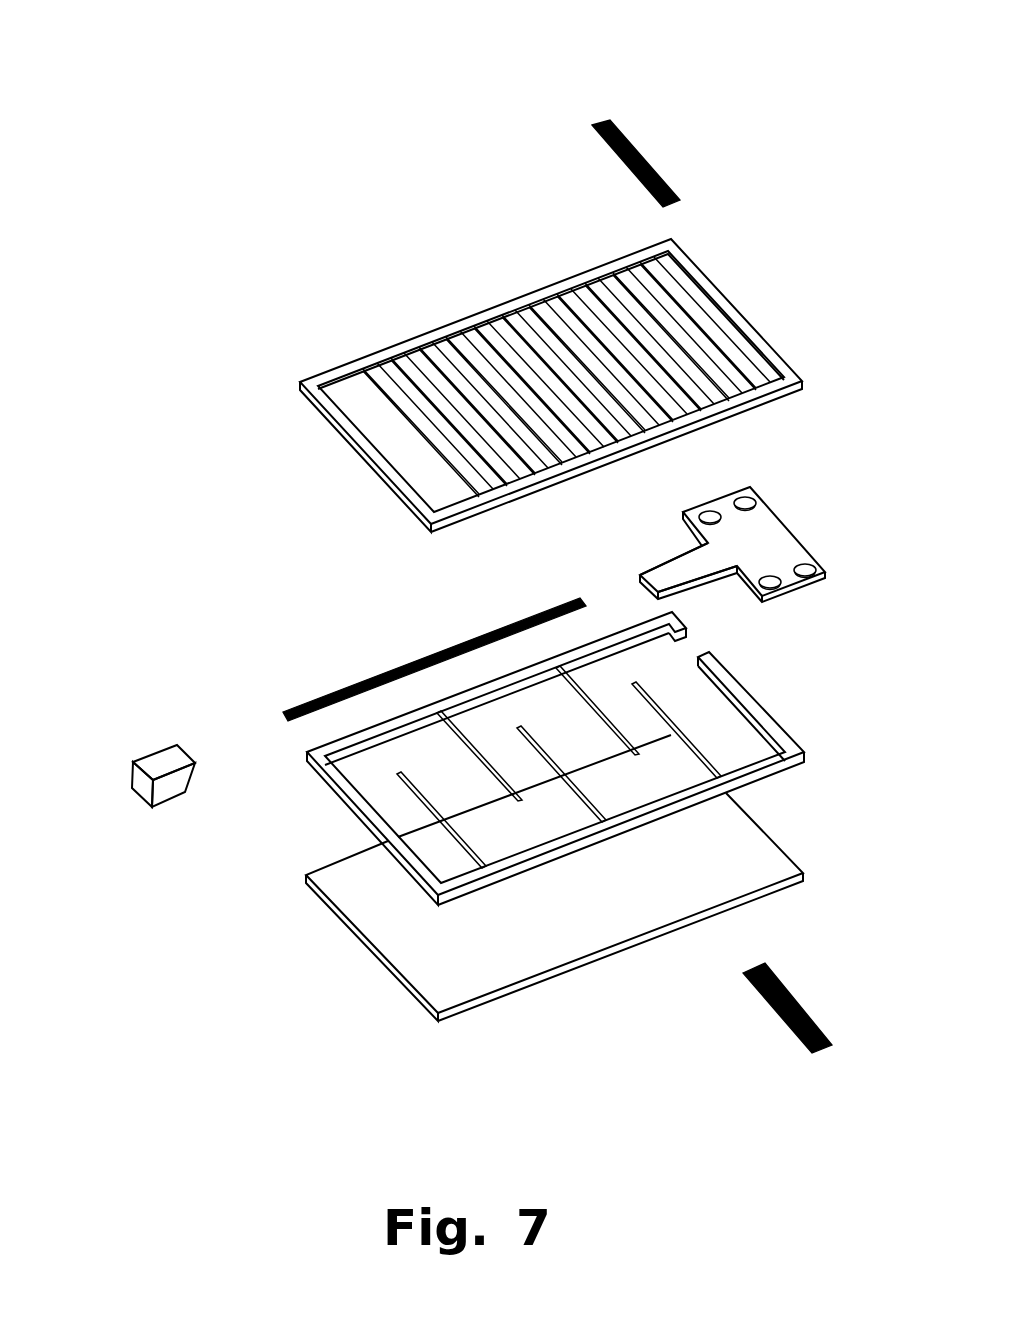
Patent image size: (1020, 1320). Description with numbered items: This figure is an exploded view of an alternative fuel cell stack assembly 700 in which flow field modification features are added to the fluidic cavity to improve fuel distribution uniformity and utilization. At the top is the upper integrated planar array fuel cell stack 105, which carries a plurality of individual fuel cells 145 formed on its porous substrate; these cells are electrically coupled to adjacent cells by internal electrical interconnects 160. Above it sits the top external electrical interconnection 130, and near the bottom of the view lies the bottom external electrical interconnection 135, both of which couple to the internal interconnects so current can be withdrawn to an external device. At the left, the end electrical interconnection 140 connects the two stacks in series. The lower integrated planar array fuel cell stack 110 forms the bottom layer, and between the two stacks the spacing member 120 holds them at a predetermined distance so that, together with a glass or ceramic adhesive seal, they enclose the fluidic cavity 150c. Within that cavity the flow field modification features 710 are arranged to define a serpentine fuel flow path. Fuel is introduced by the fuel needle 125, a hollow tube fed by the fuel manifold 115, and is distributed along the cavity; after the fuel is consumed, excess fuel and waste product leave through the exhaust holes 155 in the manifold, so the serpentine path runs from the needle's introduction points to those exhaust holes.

The fuel cell stack assembly 700 is at (318, 93).
The upper integrated planar array fuel cell stack 105 is at (546, 385).
The individual fuel cells 145 is at (412, 348).
The internal electrical interconnects 160 is at (752, 388).
The top external electrical interconnection 130 is at (618, 130).
The fuel manifold 115 is at (715, 544).
The exhaust holes 155 is at (637, 571).
The fuel needle 125 is at (365, 682).
The spacing member 120 is at (558, 758).
The fluidic cavity 150c is at (656, 770).
The flow field modification features 710 is at (713, 762).
The end electrical interconnection 140 is at (168, 760).
The lower integrated planar array fuel cell stack 110 is at (563, 985).
The bottom external electrical interconnection 135 is at (797, 1037).